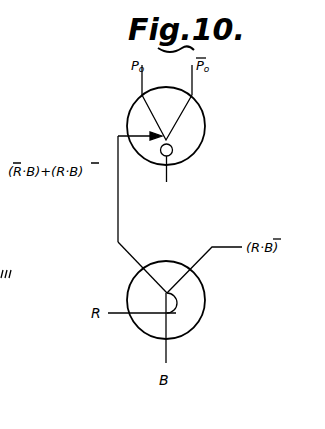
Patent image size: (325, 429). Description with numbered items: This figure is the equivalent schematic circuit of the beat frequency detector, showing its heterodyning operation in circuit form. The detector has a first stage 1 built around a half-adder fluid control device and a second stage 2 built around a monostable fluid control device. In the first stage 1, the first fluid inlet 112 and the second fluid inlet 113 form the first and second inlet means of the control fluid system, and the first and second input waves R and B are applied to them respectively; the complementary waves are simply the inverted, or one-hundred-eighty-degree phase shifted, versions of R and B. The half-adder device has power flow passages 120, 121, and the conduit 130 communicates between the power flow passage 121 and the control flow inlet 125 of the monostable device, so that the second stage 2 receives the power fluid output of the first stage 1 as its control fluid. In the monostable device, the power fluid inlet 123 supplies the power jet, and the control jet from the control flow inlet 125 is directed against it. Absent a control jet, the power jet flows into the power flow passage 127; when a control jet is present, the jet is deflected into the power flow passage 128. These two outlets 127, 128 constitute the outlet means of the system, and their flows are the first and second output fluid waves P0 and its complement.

The first stage 1 is at (242, 282).
The second stage 2 is at (246, 103).
The first fluid inlet 112 is at (117, 318).
The second fluid inlet 113 is at (167, 348).
The power flow passage 120 is at (212, 246).
The power flow passage 121 is at (131, 247).
The power fluid inlet 123 is at (167, 170).
The control flow inlet 125 is at (118, 135).
The power flow passage 127 is at (142, 80).
The power flow passage 128 is at (192, 80).
The conduit 130 is at (118, 202).